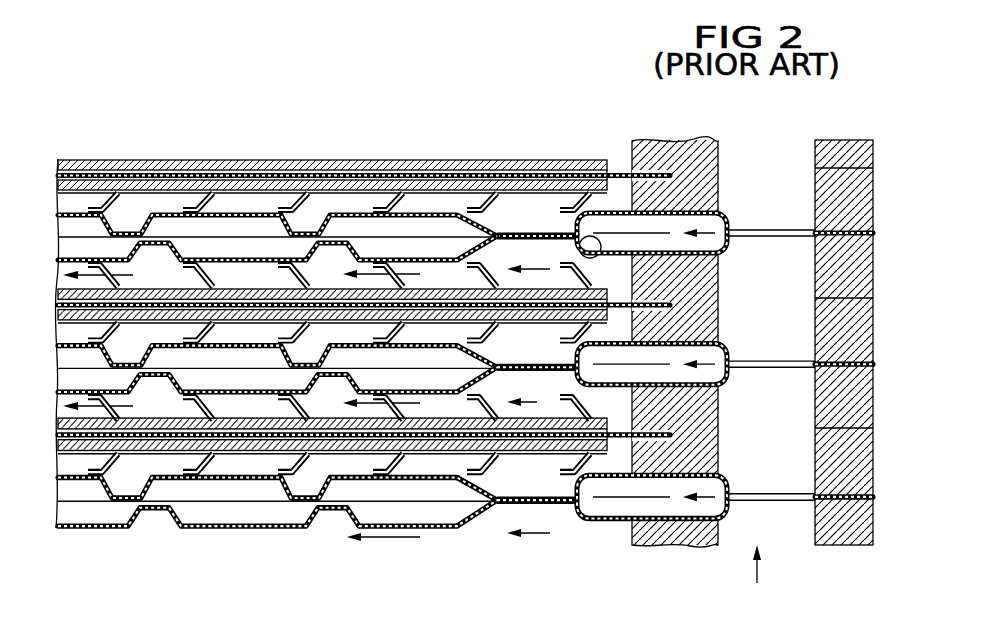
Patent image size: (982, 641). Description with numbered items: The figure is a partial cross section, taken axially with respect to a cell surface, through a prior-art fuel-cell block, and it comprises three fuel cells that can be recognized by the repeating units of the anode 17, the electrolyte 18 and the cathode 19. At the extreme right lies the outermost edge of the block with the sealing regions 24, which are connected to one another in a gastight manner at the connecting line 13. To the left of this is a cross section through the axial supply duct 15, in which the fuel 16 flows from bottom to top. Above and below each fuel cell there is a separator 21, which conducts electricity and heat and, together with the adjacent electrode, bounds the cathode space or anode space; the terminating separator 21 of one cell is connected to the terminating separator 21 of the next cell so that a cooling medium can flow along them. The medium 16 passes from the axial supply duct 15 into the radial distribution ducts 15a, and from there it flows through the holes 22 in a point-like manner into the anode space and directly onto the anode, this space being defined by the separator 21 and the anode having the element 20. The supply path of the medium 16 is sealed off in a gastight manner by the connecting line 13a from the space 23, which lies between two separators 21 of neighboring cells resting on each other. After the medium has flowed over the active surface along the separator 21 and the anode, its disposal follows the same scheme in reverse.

The connecting line 13 is at (828, 246).
The connecting line 13a is at (527, 233).
The axial supply duct 15 is at (786, 162).
The radial distribution duct 15a is at (660, 226).
The fuel 16 is at (617, 370).
The anode 17 is at (115, 159).
The electrolyte 18 is at (183, 159).
The cathode 19 is at (242, 159).
The element 20 is at (370, 230).
The separator 21 is at (430, 216).
The hole 22 is at (597, 238).
The space 23 is at (258, 232).
The sealing region 24 is at (830, 197).